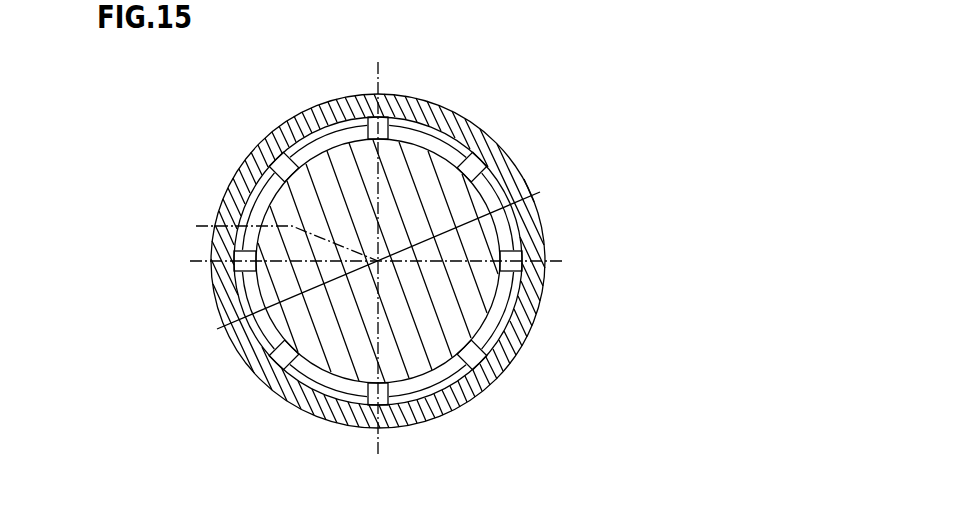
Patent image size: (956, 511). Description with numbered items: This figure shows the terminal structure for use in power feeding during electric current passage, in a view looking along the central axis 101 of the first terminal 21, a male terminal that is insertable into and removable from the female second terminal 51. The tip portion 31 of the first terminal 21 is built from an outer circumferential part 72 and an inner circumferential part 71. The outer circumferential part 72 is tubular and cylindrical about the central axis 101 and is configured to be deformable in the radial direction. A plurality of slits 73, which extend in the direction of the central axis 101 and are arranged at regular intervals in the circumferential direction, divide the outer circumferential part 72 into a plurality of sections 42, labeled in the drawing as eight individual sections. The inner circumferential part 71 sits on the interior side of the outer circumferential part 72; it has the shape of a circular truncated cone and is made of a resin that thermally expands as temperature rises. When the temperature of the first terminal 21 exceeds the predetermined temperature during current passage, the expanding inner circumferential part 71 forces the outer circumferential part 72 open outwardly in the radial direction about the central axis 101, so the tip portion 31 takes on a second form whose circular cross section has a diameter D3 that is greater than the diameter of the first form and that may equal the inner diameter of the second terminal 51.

The first terminal 21 is at (467, 396).
The tip portion 31 is at (461, 137).
The sections 42 is at (323, 123).
The second terminal 51 is at (260, 135).
The inner circumferential part 71 is at (521, 345).
The outer circumferential part 72 is at (507, 291).
The slits 73 is at (270, 360).
The central axis 101 is at (265, 239).
The diameter D3 is at (447, 232).